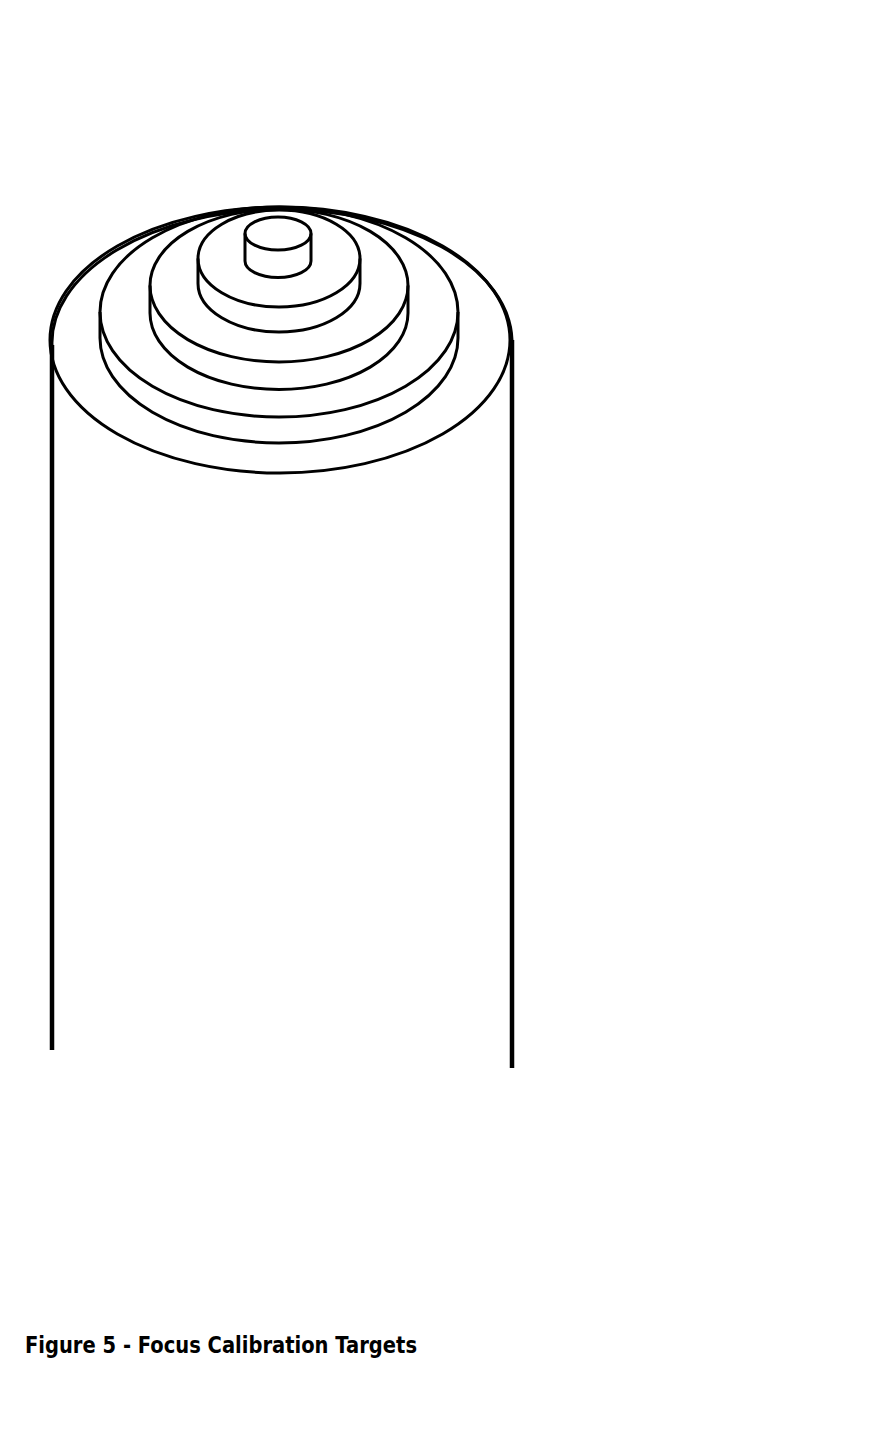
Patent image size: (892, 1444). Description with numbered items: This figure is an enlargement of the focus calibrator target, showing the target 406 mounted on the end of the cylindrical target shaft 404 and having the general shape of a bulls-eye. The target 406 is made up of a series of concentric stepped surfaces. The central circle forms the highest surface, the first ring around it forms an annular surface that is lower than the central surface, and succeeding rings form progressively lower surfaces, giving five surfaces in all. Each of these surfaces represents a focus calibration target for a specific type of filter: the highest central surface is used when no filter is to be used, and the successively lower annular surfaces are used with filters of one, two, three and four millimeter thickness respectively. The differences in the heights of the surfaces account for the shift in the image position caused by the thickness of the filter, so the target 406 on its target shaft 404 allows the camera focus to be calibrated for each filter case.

The target shaft 404 is at (281, 637).
The target 406 is at (406, 231).